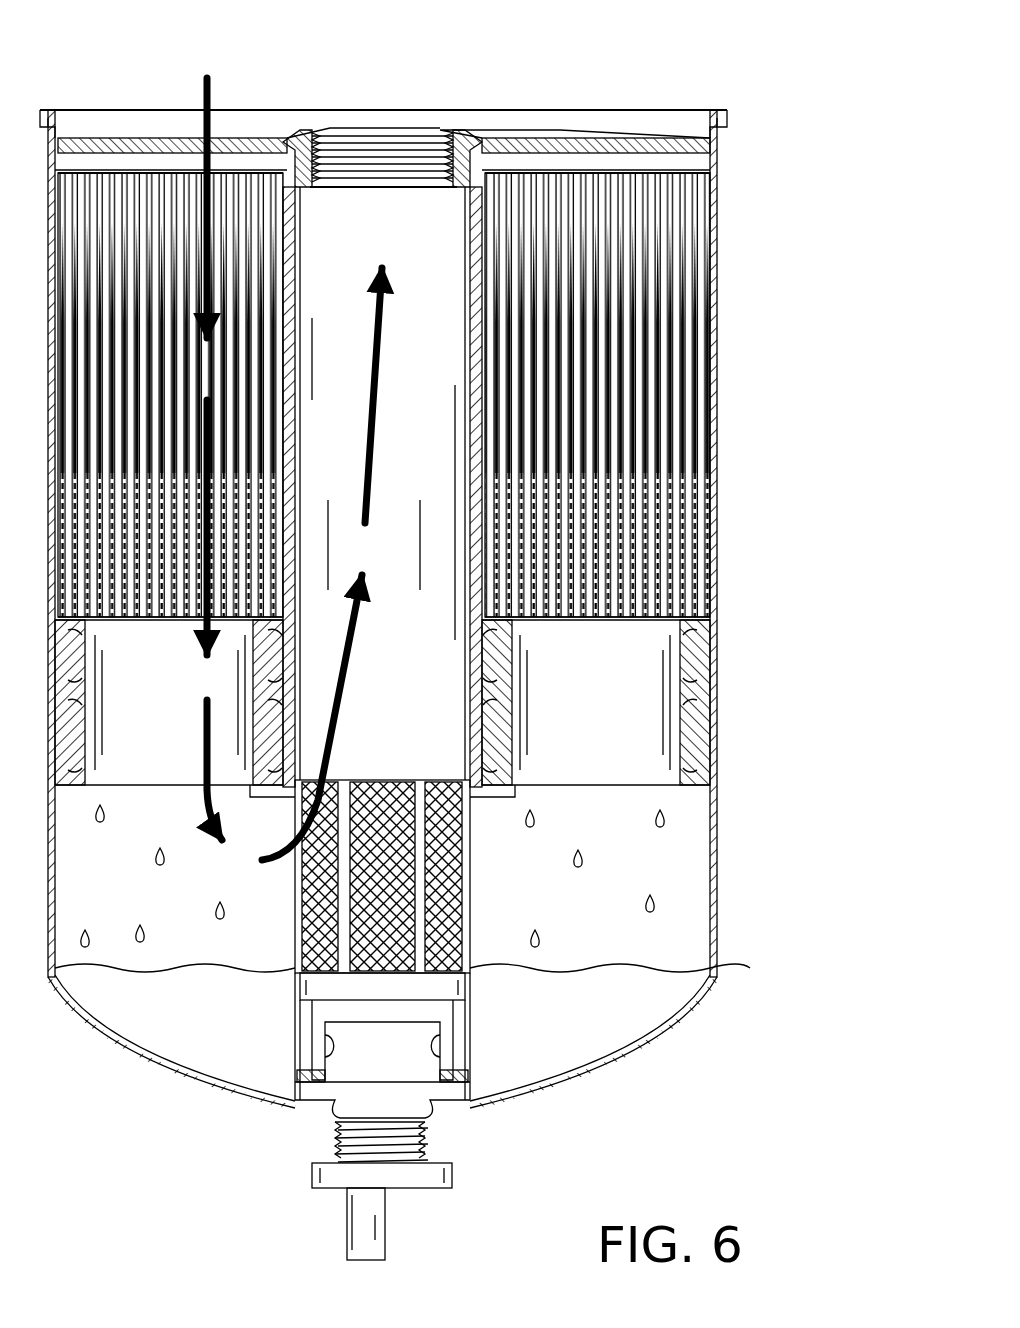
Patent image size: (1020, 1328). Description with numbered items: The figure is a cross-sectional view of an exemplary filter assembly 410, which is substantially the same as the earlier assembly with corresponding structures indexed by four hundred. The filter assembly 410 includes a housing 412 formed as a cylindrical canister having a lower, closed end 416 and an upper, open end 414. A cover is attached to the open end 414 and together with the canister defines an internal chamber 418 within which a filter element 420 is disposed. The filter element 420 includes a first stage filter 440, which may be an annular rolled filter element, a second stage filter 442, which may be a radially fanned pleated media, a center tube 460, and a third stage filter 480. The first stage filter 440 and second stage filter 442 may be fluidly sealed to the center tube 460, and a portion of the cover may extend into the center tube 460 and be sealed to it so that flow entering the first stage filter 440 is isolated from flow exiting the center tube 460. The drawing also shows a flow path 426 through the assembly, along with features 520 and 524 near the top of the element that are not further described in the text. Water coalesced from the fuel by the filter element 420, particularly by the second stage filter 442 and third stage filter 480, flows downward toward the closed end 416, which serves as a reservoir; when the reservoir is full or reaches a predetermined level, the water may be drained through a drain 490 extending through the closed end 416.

The filter assembly 410 is at (785, 72).
The housing 412 is at (718, 210).
The open end 414 is at (728, 125).
The closed end 416 is at (703, 990).
The internal chamber 418 is at (70, 908).
The filter element 420 is at (718, 545).
The fluid flow path 426 is at (218, 142).
The first stage filter 440 is at (625, 313).
The second stage filter 442 is at (645, 675).
The center tube 460 is at (297, 233).
The third stage filter 480 is at (430, 935).
The drain 490 is at (420, 1103).
The threaded connection 520 is at (492, 150).
The gasket 524 is at (75, 140).